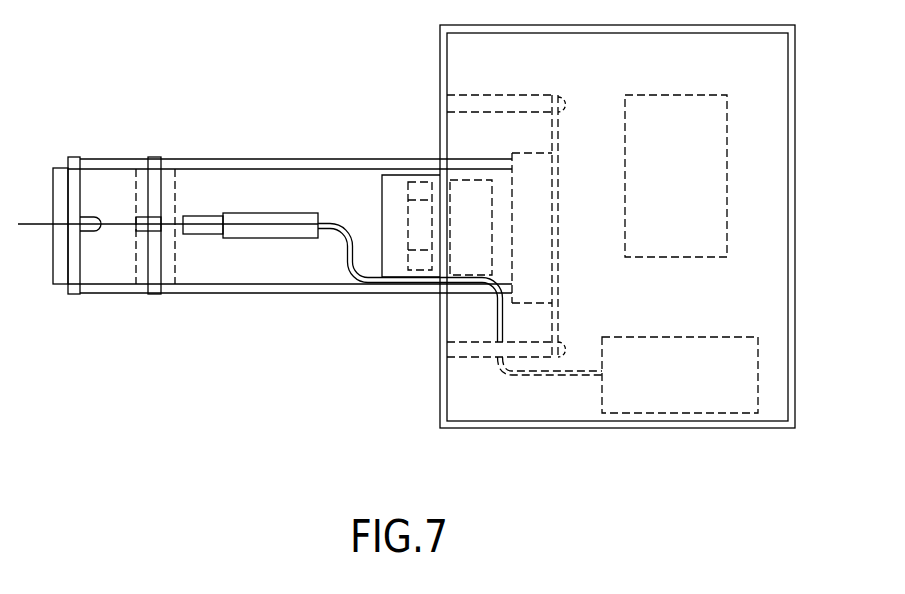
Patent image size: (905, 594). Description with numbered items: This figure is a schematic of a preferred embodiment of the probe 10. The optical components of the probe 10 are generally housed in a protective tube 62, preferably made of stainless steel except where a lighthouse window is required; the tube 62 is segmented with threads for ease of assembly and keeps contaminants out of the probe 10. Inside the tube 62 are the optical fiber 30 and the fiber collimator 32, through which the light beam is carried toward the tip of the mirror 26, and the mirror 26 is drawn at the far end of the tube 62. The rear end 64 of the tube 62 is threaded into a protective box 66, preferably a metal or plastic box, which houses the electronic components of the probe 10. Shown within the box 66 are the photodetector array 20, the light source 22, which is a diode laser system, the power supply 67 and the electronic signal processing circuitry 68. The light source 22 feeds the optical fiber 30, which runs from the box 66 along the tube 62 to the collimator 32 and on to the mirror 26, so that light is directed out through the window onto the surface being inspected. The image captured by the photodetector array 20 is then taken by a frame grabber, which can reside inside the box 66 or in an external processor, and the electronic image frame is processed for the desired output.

The probe 10 is at (82, 337).
The photodetector array 20 is at (507, 225).
The light source 22 is at (758, 400).
The mirror 26 is at (73, 221).
The optical fiber 30 is at (352, 257).
The fiber collimator 32 is at (157, 218).
The protective tube 62 is at (120, 294).
The rear end 64 is at (497, 170).
The protective box 66 is at (795, 295).
The power supply 67 is at (727, 183).
The electronic signal processing circuitry 68 is at (557, 128).